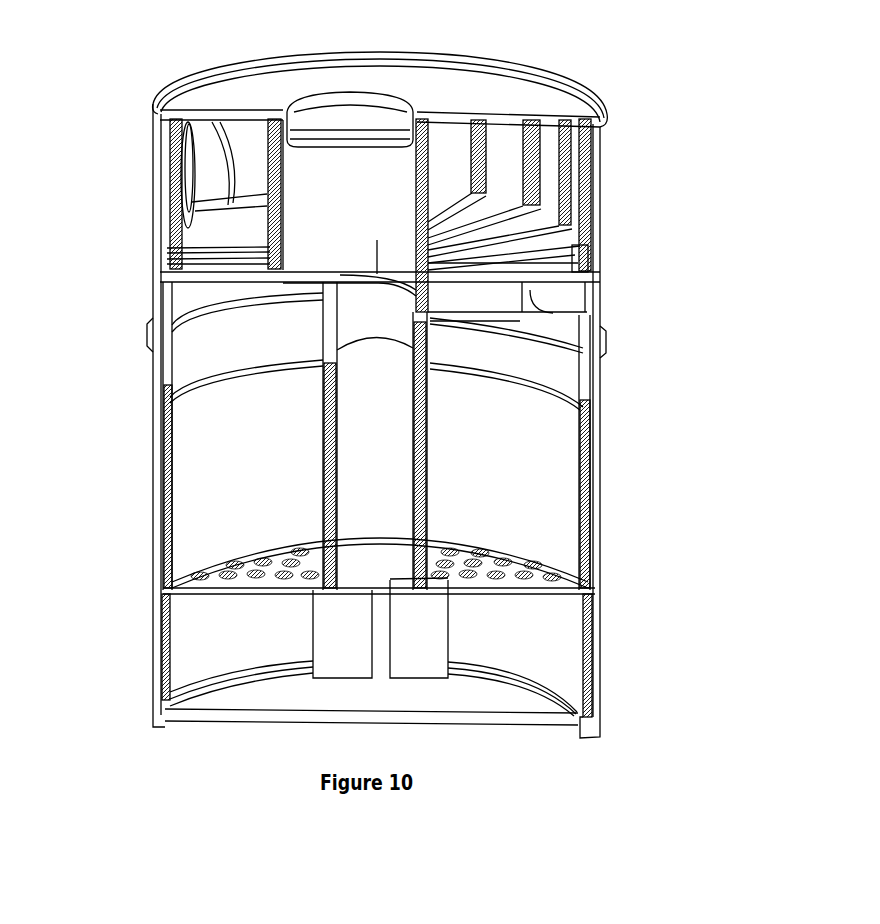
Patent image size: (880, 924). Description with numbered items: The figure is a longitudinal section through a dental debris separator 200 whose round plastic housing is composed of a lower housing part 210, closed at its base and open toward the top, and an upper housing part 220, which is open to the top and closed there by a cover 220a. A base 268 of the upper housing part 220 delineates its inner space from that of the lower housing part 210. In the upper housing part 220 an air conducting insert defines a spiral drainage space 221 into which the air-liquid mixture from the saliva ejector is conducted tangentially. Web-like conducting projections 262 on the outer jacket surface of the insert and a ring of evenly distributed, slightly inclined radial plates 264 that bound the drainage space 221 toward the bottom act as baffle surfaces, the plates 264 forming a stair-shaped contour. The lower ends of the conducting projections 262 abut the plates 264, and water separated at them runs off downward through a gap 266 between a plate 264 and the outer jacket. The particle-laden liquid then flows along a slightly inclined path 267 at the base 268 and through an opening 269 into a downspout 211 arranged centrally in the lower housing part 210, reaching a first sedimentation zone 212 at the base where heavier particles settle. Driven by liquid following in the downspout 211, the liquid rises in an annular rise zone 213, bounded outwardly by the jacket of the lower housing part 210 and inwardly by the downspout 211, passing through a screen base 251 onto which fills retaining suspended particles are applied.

The separator 200 is at (640, 197).
The lower housing part 210 is at (153, 512).
The downspout 211 is at (390, 448).
The first sedimentation zone 212 is at (537, 649).
The annular rise zone 213 is at (207, 475).
The upper housing part 220 is at (160, 293).
The cover 220a is at (153, 107).
The drainage space 221 is at (457, 153).
The screen base 251 is at (575, 594).
The conducting projections 262 is at (533, 167).
The radial plates 264 is at (587, 283).
The gap 266 is at (583, 253).
The inclined path 267 is at (458, 297).
The base 268 is at (215, 275).
The opening 269 is at (416, 292).